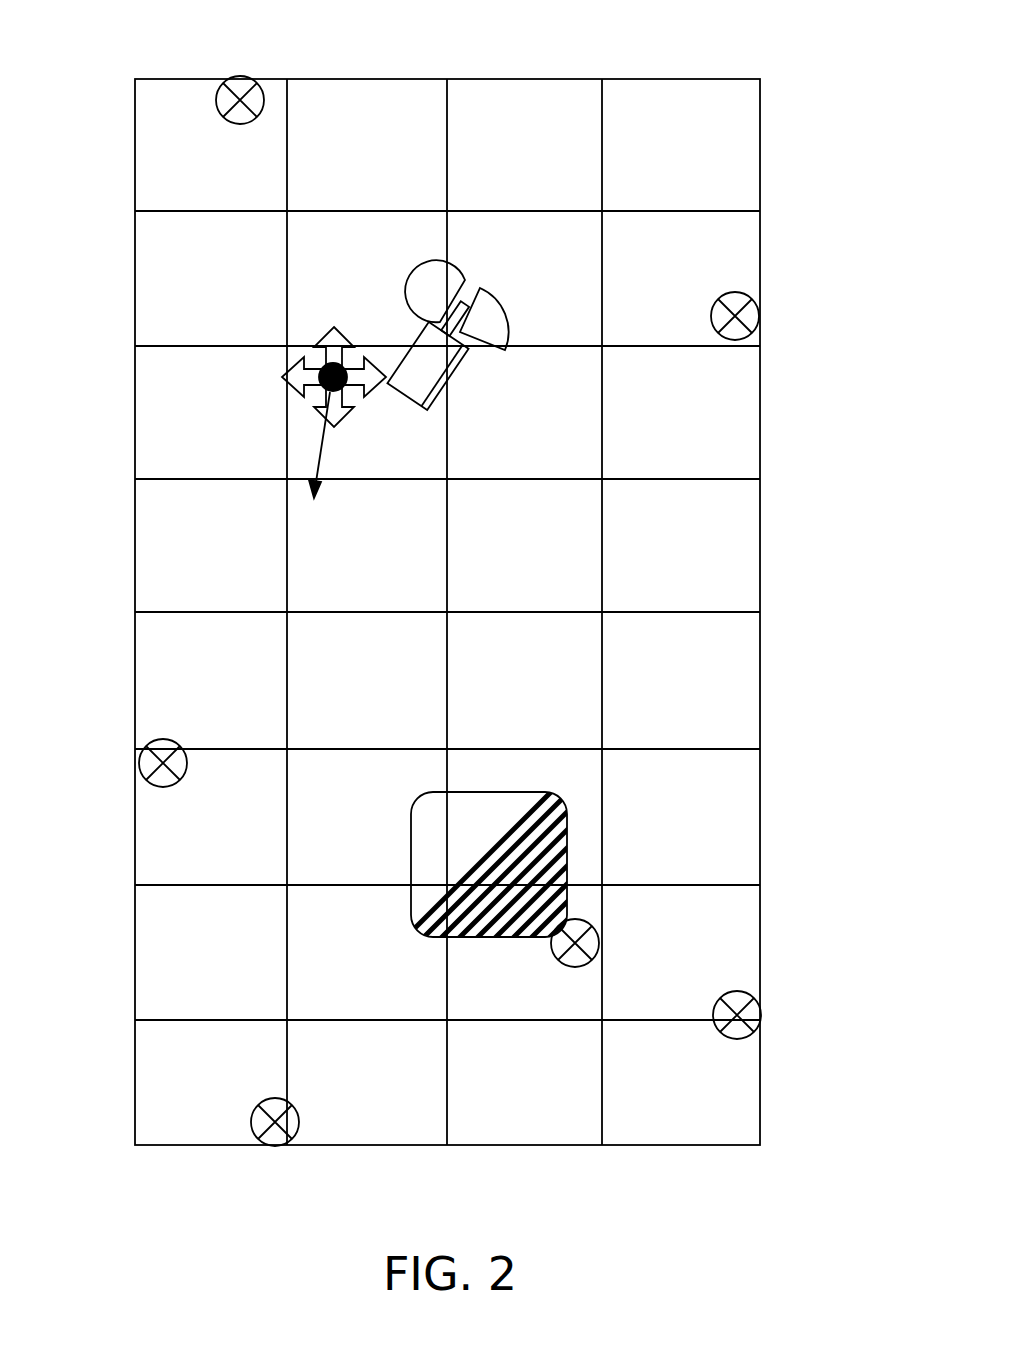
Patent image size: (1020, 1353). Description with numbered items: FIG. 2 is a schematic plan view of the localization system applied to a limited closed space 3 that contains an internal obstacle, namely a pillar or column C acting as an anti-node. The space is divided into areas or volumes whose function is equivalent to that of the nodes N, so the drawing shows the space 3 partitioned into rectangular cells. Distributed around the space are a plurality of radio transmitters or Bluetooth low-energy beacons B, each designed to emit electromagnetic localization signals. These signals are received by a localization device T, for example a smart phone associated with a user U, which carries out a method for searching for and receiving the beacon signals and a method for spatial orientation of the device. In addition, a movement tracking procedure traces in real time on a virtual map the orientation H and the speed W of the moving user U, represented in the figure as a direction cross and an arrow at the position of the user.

The limited closed space 3 is at (477, 1148).
The nodes N is at (407, 97).
The radio transmitters or Bluetooth low-energy beacons B is at (240, 92).
The pillar or column C is at (412, 860).
The localization device T is at (430, 373).
The orientation H is at (285, 377).
The user U is at (322, 388).
The speed W is at (317, 462).